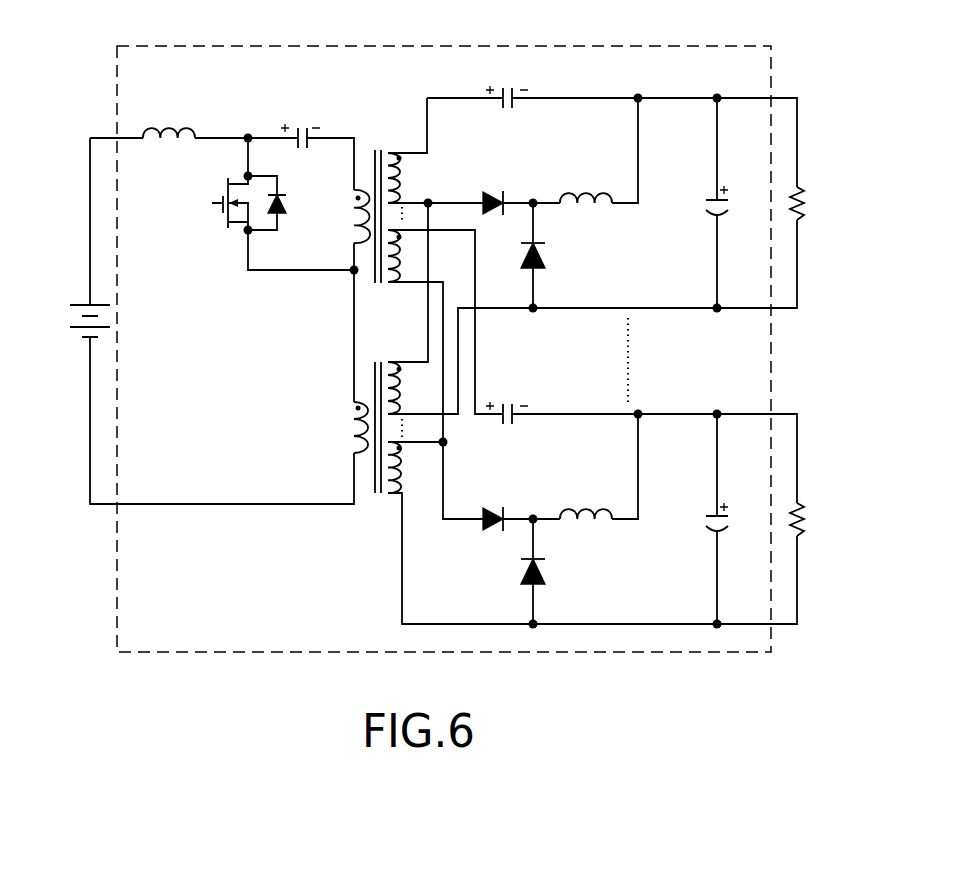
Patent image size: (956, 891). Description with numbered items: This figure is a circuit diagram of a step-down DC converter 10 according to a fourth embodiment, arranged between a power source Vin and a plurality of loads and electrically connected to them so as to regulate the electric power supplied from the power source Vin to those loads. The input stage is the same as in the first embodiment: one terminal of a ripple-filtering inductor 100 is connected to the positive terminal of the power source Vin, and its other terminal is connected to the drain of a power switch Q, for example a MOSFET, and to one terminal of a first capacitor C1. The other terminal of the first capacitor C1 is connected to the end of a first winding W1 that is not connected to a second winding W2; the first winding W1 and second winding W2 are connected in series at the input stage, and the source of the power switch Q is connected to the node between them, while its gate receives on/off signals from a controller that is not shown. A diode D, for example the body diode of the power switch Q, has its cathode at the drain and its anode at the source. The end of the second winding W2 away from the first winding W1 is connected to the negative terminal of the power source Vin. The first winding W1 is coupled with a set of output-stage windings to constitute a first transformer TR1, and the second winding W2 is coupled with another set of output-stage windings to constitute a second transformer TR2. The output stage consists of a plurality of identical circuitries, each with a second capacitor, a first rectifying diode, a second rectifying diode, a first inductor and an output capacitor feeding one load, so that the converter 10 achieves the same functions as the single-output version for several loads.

The step-down DC converter 10 is at (470, 47).
The ripple-filtering inductor 100 is at (170, 130).
The first capacitor C1 is at (300, 123).
The power source Vin is at (70, 321).
The power switch Q is at (219, 203).
The diode D is at (276, 203).
The first transformer TR1 is at (377, 199).
The second transformer TR2 is at (378, 444).
The first winding W1 is at (352, 210).
The second winding W2 is at (352, 420).